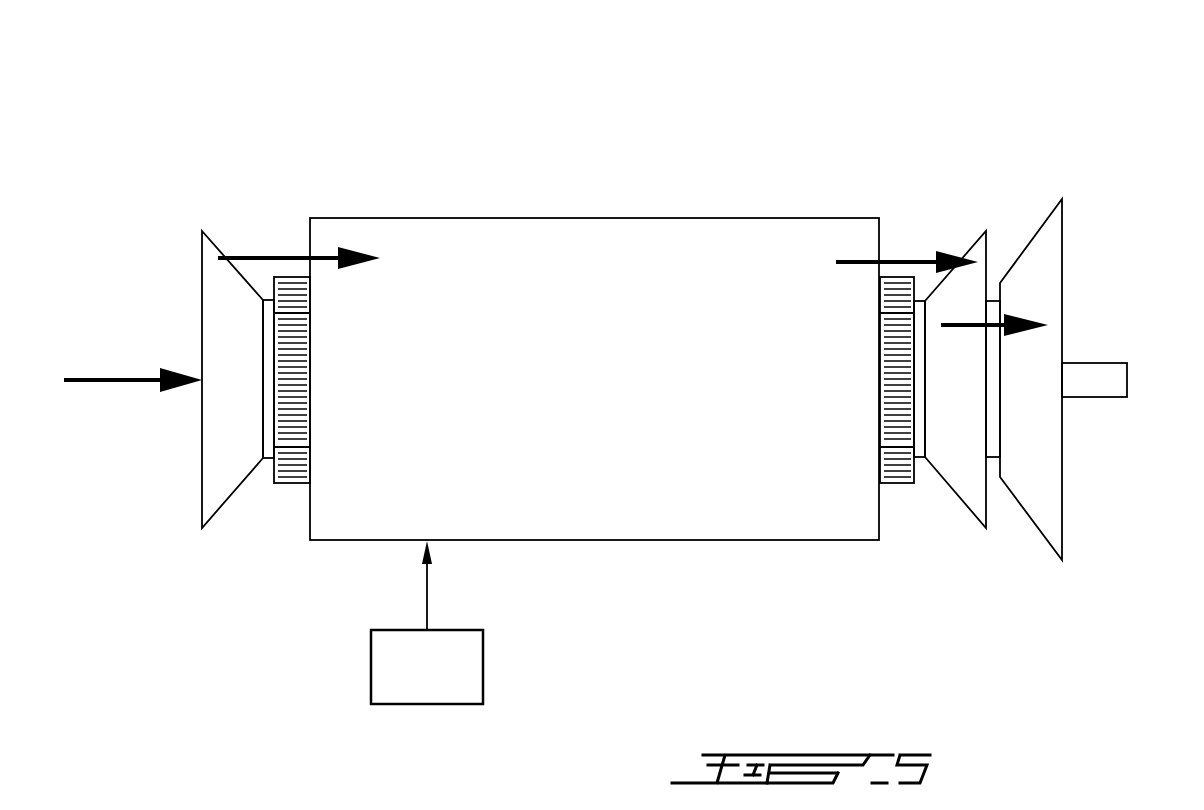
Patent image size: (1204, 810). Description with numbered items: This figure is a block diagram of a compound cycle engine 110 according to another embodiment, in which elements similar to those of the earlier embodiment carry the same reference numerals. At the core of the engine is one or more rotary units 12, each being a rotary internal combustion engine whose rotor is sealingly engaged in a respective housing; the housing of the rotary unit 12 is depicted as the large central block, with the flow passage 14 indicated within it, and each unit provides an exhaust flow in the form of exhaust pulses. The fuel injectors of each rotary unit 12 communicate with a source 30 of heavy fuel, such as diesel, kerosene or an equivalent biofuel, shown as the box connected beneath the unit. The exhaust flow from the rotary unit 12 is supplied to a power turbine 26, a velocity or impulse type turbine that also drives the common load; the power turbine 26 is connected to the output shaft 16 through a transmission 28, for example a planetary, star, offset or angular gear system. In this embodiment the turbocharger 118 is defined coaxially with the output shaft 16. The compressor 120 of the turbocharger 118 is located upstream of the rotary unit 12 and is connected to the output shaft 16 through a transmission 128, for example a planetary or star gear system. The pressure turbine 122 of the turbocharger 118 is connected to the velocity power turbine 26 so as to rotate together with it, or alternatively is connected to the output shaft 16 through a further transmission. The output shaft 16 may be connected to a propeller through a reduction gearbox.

The compound cycle engine 110 is at (233, 135).
The rotary unit 12 is at (468, 252).
The air passageway 14 is at (543, 250).
The turbocharger 118 is at (195, 240).
The compressor 120 is at (231, 452).
The pressure turbine 122 is at (1033, 470).
The transmission 128 is at (293, 430).
The transmission 28 is at (892, 320).
The power turbine 26 is at (960, 465).
The output shaft 16 is at (1103, 378).
The source of heavy fuel 30 is at (424, 688).